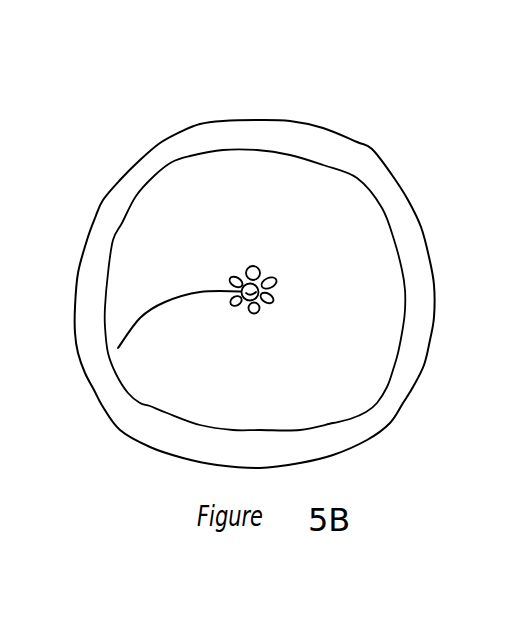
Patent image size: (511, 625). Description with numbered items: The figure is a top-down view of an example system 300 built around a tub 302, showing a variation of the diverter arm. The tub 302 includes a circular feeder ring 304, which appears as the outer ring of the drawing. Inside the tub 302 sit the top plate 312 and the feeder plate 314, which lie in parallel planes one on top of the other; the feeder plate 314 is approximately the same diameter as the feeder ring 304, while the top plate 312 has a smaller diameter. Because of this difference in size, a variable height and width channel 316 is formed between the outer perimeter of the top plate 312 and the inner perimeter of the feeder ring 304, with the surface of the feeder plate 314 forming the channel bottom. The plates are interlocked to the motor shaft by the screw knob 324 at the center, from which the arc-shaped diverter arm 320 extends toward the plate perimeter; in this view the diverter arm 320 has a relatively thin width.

The system 300 is at (190, 97).
The tub 302 is at (398, 428).
The circular feeder ring 304 is at (371, 151).
The top plate 312 is at (391, 303).
The feeder plate 314 is at (411, 355).
The channel 316 is at (392, 223).
The diverter arm 320 is at (122, 341).
The screw knob 324 is at (238, 281).